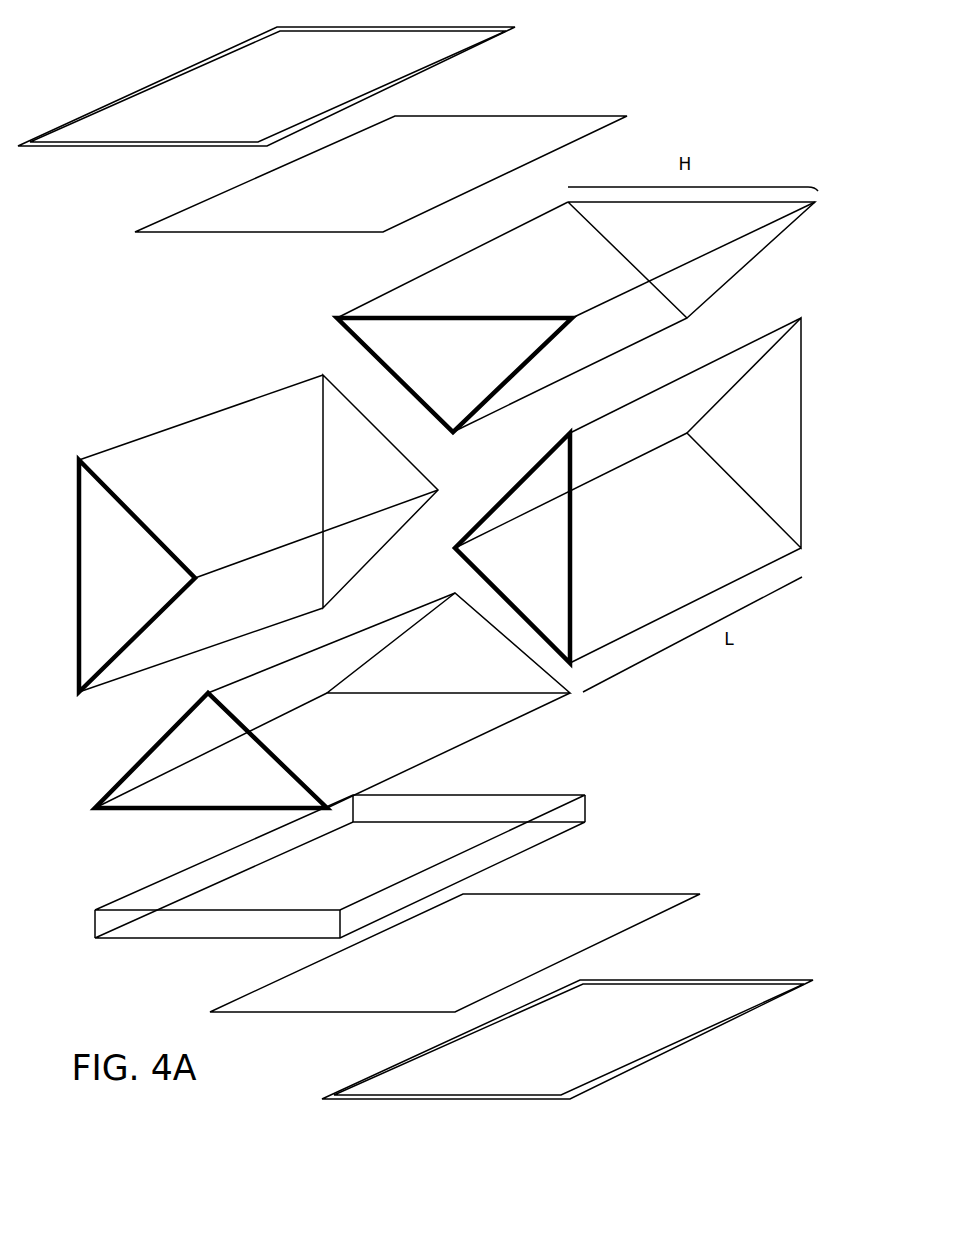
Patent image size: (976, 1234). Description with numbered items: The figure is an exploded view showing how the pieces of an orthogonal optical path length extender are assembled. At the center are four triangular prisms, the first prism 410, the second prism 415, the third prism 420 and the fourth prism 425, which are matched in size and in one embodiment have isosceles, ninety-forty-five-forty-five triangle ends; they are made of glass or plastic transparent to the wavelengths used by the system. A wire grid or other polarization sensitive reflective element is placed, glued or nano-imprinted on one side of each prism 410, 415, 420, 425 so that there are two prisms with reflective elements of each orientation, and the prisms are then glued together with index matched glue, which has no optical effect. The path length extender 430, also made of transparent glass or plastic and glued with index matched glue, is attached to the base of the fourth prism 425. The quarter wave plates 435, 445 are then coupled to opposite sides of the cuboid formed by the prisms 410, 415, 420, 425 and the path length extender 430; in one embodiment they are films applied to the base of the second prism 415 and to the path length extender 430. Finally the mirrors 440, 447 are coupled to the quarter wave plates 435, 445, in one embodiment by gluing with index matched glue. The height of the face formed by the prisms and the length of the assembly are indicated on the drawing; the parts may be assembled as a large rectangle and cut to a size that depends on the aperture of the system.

The mirror 447 is at (266, 86).
The quarter wave plate 445 is at (381, 174).
The prism 2 415 is at (576, 317).
The prism 1 410 is at (258, 531).
The prism 3 420 is at (665, 490).
The prism 4 425 is at (332, 700).
The path length extender 430 is at (322, 894).
The quarter wave plate 435 is at (455, 953).
The mirror 440 is at (567, 1039).